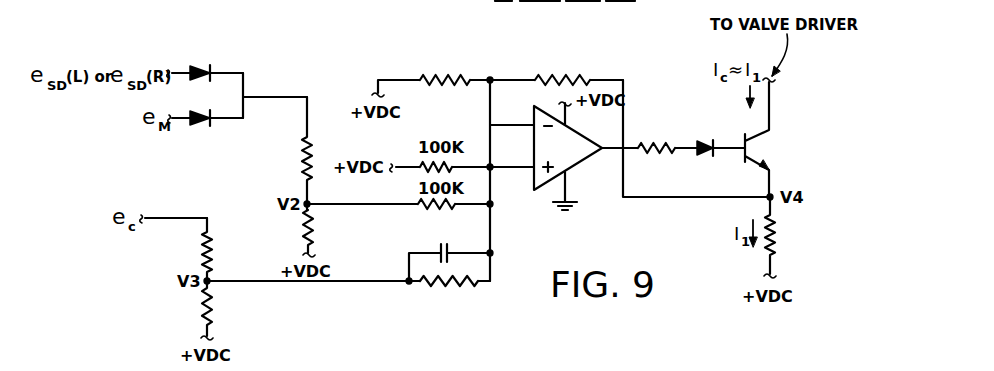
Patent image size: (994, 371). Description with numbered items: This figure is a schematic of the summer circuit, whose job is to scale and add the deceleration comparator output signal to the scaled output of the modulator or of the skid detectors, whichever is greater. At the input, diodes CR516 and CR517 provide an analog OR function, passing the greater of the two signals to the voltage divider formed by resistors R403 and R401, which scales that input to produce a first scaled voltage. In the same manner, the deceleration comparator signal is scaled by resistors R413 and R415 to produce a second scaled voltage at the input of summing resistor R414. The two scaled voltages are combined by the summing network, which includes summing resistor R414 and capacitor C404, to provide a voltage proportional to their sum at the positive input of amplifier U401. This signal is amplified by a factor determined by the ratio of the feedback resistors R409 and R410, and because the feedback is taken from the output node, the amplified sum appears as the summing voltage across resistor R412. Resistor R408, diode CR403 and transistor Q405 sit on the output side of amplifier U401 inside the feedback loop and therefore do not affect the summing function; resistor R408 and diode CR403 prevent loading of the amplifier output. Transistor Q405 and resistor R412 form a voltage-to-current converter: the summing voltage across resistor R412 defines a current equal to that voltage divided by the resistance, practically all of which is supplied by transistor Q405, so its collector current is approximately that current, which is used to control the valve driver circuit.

The diode CR516 is at (207, 61).
The diode CR517 is at (207, 106).
The resistor R403 is at (256, 150).
The resistor R401 is at (333, 230).
The resistor R413 is at (231, 249).
The resistor R415 is at (231, 310).
The capacitor C404 is at (449, 251).
The summing resistor R414 is at (449, 294).
The feedback resistor R409 is at (431, 72).
The feedback resistor R410 is at (556, 66).
The amplifier U401 is at (552, 156).
The resistor R408 is at (649, 137).
The diode CR403 is at (712, 161).
The transistor Q405 is at (781, 137).
The resistor R412 is at (796, 237).